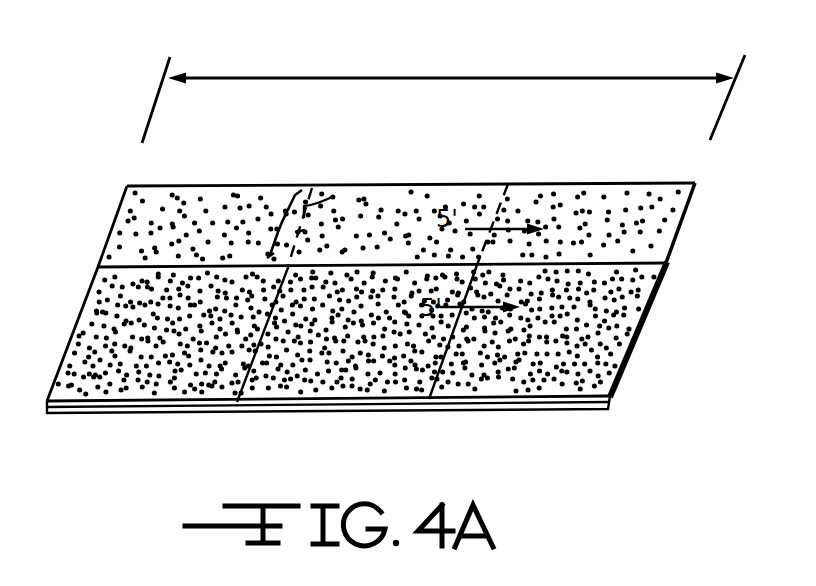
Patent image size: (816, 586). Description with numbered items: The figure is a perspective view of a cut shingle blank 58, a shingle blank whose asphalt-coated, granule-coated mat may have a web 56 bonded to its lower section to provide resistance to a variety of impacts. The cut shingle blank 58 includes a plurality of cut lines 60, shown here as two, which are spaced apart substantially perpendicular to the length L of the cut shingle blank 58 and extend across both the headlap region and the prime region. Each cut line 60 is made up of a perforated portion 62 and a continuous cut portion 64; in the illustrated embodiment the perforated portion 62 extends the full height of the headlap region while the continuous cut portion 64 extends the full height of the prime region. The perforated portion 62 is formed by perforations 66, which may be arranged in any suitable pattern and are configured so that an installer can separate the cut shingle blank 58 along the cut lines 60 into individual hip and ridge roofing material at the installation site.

The web 56 is at (592, 409).
The cut shingle blank 58 is at (101, 198).
The cut lines 60 is at (479, 209).
The perforated portion 62 is at (282, 222).
The continuous cut portion 64 is at (248, 358).
The perforations 66 is at (303, 238).
The length L is at (395, 78).